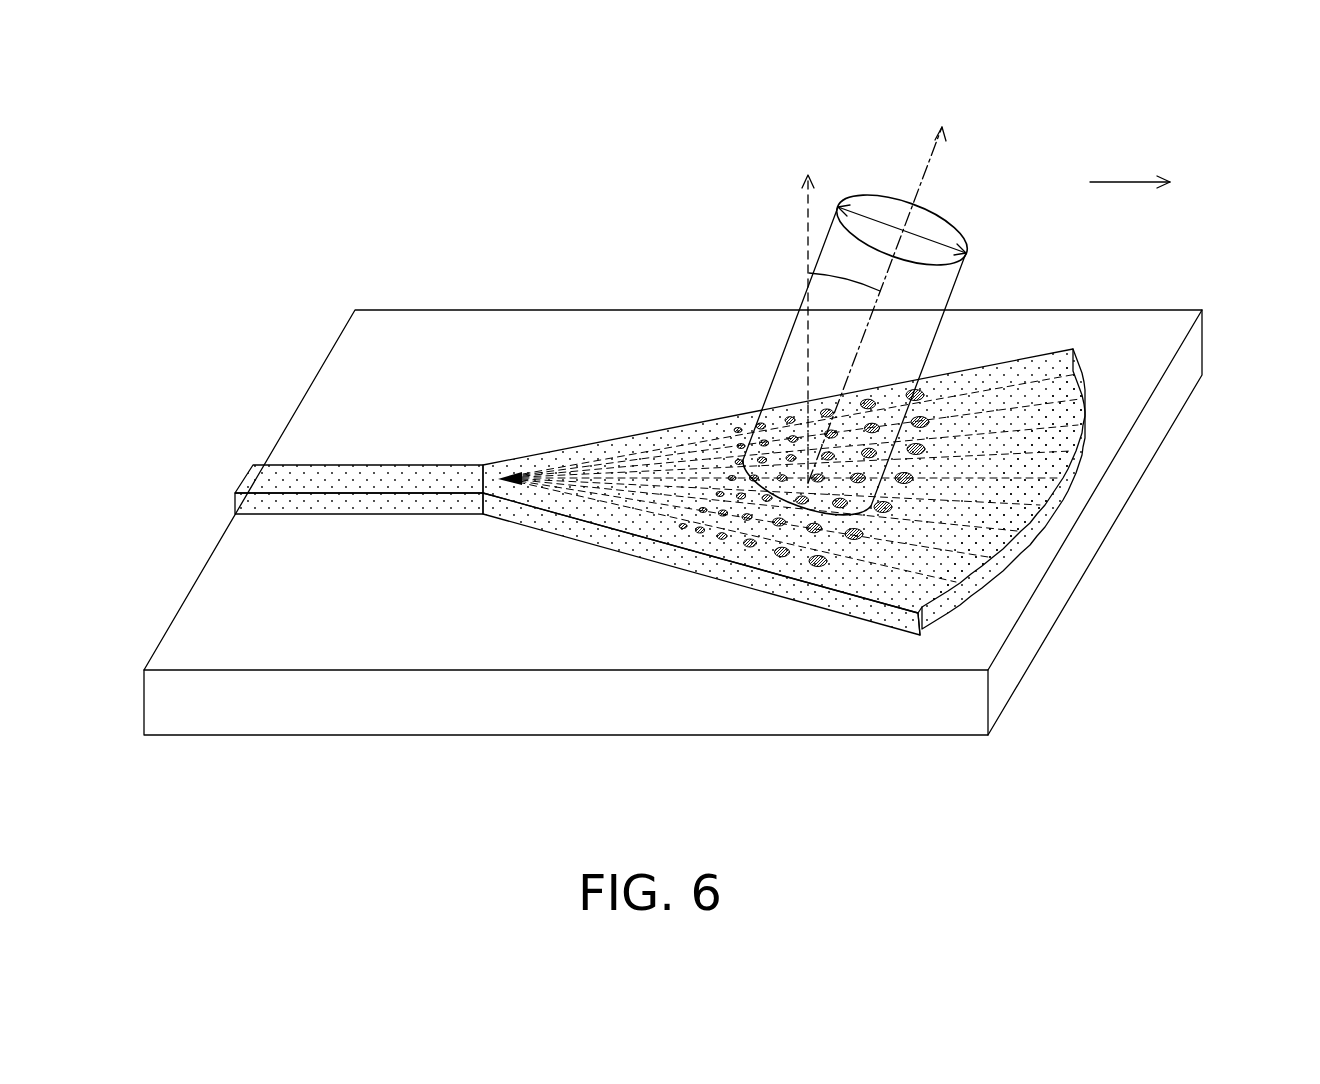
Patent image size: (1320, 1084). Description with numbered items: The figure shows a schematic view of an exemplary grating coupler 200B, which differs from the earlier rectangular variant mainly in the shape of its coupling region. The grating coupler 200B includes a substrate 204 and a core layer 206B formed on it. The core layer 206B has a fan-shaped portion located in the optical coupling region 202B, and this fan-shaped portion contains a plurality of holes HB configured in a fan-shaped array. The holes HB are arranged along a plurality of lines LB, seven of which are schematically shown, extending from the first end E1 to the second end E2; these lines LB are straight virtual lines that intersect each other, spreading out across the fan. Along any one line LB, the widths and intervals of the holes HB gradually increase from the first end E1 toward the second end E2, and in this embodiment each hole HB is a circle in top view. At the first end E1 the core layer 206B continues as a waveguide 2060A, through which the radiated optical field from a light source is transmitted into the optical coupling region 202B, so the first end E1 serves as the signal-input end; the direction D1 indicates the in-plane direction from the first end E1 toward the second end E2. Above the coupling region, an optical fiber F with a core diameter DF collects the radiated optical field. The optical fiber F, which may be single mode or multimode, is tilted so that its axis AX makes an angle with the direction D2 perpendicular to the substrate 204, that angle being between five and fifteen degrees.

The grating coupler 200B is at (1227, 520).
The substrate 204 is at (1075, 560).
The core layer 206B is at (1042, 503).
The optical coupling region 202B is at (712, 431).
The waveguide 2060A is at (267, 485).
The holes HB is at (928, 415).
The lines LB is at (965, 373).
The first end E1 is at (298, 358).
The second end E2 is at (1192, 358).
The direction D1 is at (1147, 182).
The direction D2 is at (806, 310).
The axis AX is at (883, 284).
The core diameter DF is at (933, 237).
The optical fiber F is at (930, 295).